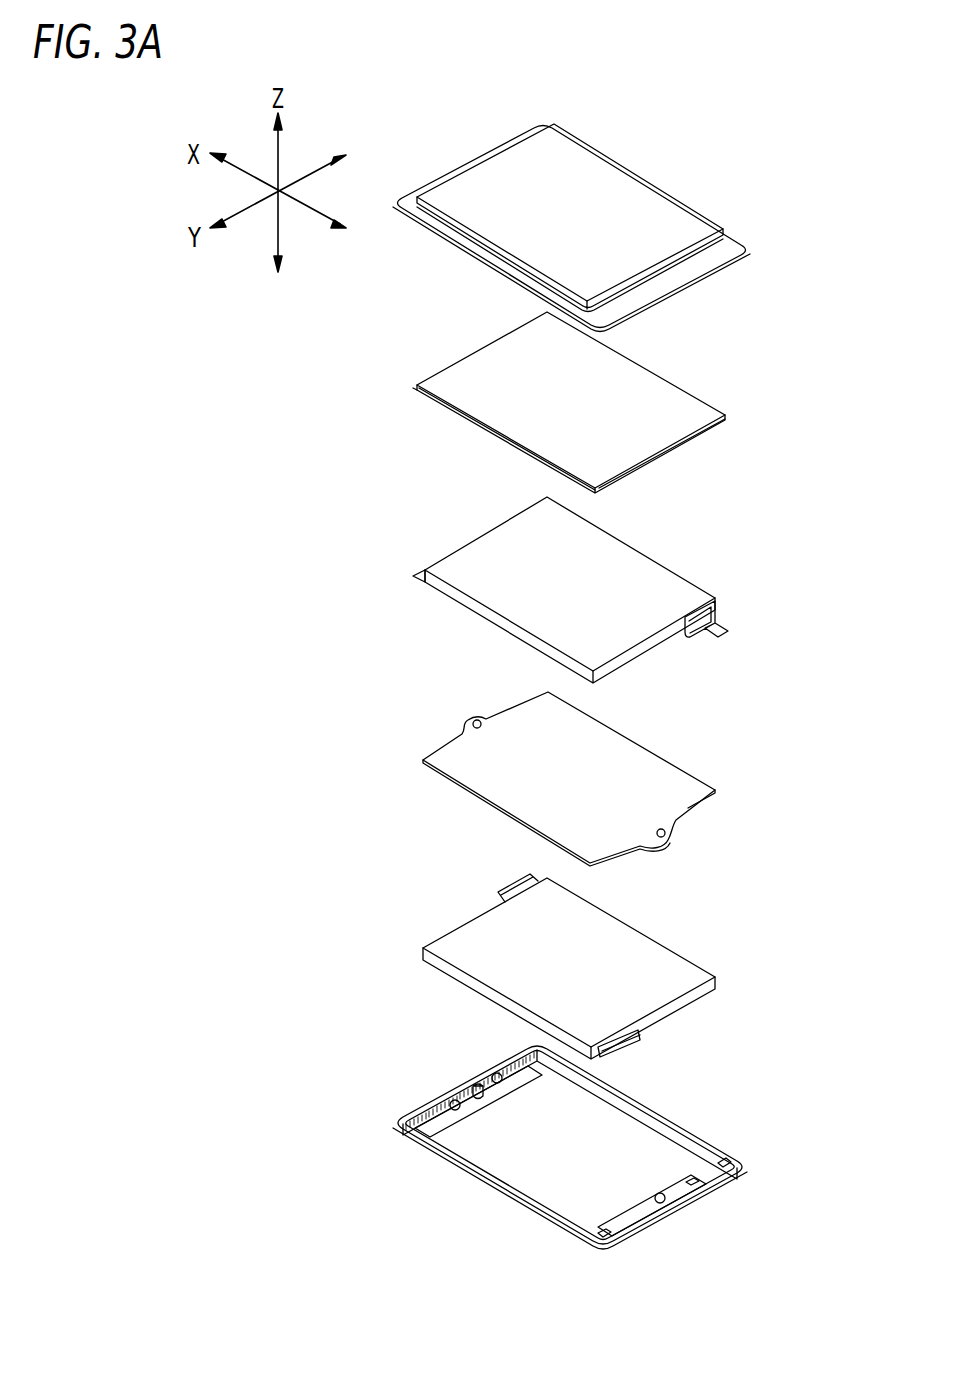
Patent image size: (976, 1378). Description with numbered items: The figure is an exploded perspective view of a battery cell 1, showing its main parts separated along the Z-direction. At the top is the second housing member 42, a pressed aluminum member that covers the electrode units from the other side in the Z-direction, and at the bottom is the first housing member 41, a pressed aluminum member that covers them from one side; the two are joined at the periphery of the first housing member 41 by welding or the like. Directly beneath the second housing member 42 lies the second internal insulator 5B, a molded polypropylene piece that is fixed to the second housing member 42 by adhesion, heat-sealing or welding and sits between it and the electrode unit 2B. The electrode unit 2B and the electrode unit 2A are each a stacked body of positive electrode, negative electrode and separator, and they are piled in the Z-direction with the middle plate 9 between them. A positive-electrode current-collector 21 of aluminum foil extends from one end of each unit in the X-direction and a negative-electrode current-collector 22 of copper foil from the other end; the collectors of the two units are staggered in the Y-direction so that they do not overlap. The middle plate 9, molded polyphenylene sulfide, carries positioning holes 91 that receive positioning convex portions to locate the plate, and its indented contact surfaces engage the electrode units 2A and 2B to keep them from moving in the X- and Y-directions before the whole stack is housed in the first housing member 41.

The battery cell 1 is at (331, 402).
The second housing member 42 is at (655, 201).
The second internal insulator 5B is at (466, 371).
The electrode unit 2B is at (650, 563).
The positive-electrode current-collector 21 is at (418, 573).
The negative-electrode current-collector 22 is at (708, 638).
The middle plate 9 is at (650, 759).
The positioning hole 91 is at (470, 719).
The electrode unit 2A is at (655, 949).
The first housing member 41 is at (472, 1197).